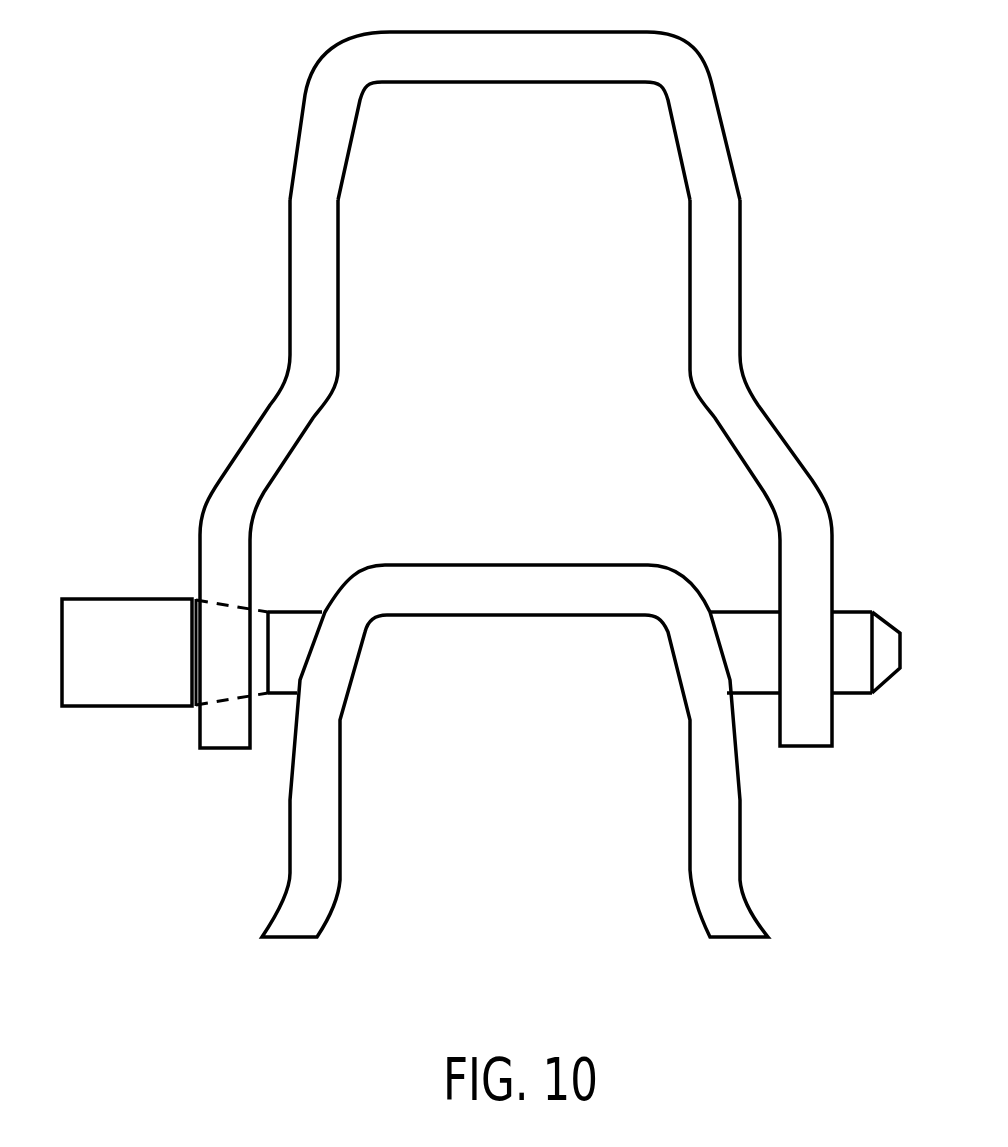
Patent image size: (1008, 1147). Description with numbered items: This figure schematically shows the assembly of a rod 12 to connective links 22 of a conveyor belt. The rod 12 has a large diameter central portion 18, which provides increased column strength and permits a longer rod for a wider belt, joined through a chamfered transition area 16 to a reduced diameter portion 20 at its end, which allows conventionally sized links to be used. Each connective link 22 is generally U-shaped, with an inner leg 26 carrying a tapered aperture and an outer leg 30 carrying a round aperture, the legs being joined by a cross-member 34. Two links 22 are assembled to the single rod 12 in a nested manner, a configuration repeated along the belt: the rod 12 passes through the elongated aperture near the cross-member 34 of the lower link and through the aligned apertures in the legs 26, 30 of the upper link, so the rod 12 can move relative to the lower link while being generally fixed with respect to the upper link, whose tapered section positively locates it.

The rod 12 is at (478, 653).
The chamfered transition area 16 is at (262, 617).
The large diameter central portion 18 is at (115, 617).
The reduced diameter portion 20 is at (866, 612).
The connective link 22 is at (516, 390).
The leg 26 is at (252, 430).
The leg 30 is at (763, 410).
The cross-member 34 is at (513, 73).